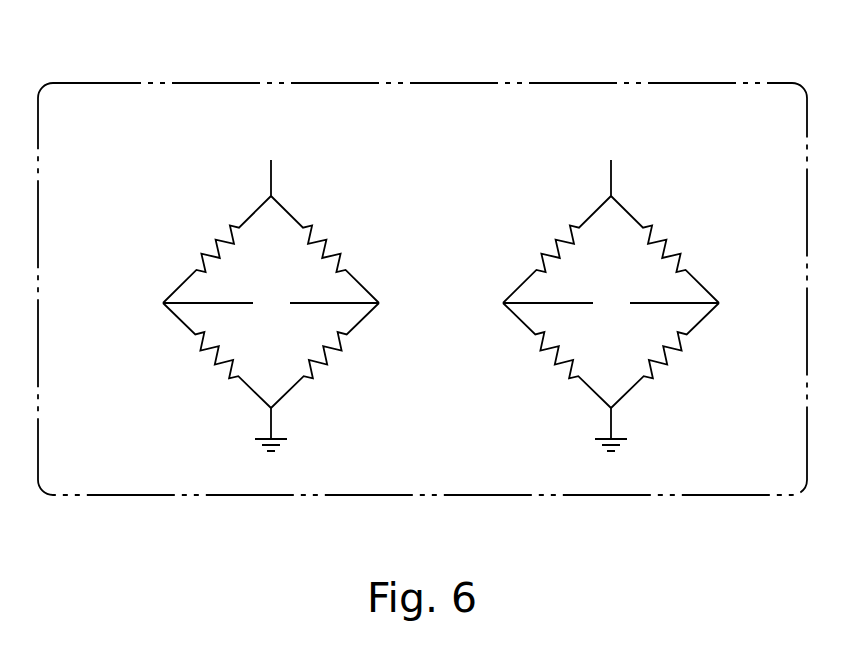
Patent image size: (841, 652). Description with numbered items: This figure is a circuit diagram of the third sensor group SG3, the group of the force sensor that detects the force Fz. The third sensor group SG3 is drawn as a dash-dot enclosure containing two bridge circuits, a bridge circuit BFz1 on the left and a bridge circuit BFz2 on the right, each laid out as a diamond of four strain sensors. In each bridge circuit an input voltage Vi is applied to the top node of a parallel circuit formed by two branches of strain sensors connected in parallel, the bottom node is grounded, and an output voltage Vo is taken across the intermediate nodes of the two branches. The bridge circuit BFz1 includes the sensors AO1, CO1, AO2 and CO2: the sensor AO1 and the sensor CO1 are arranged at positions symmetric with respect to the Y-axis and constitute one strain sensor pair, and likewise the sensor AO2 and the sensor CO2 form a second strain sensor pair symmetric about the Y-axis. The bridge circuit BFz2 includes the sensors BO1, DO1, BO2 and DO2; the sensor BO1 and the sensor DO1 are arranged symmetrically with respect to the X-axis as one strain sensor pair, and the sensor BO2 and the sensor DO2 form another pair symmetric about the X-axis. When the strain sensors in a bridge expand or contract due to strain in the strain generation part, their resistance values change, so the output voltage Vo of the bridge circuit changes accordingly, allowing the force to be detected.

The third sensor group SG3 is at (149, 83).
The bridge circuit BFz1 is at (154, 166).
The bridge circuit BFz2 is at (528, 166).
The sensor AO1 is at (210, 249).
The sensor AO2 is at (327, 249).
The sensor CO1 is at (326, 355).
The sensor CO2 is at (210, 355).
The sensor BO1 is at (550, 249).
The sensor BO2 is at (668, 249).
The sensor DO1 is at (666, 355).
The sensor DO2 is at (550, 355).